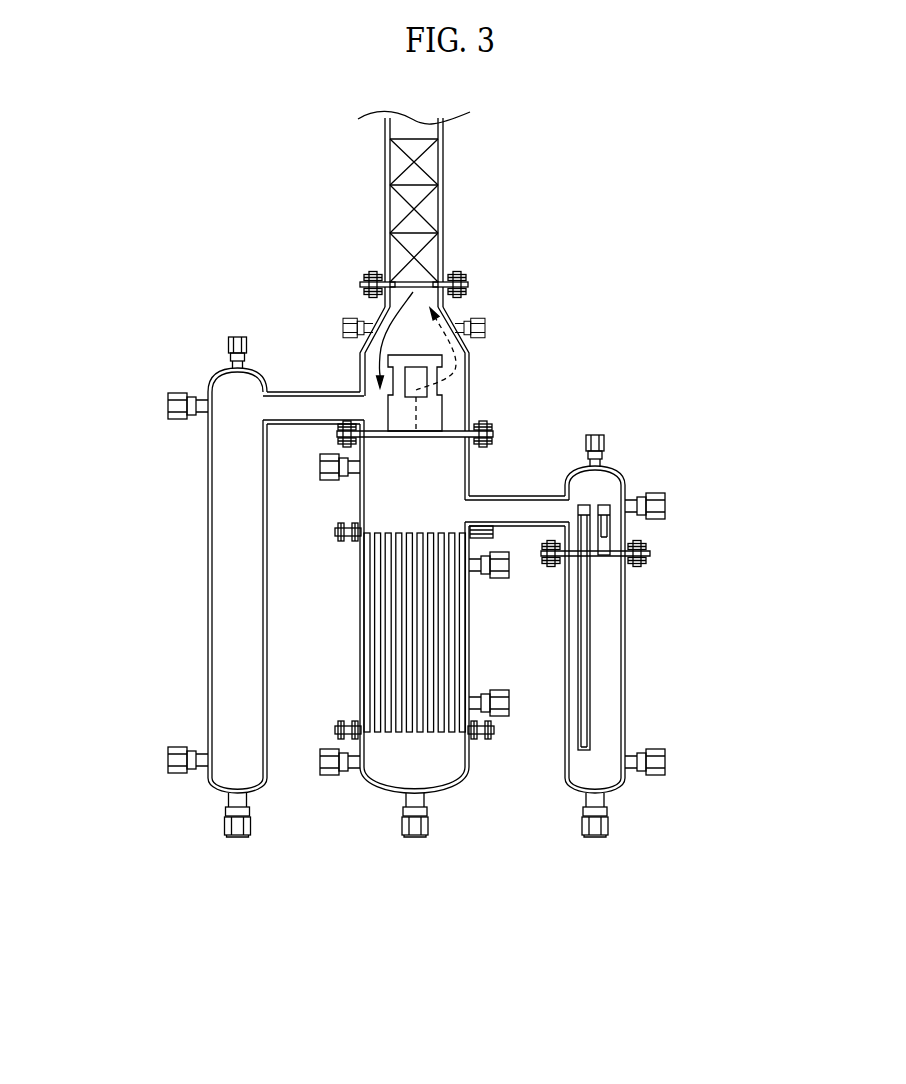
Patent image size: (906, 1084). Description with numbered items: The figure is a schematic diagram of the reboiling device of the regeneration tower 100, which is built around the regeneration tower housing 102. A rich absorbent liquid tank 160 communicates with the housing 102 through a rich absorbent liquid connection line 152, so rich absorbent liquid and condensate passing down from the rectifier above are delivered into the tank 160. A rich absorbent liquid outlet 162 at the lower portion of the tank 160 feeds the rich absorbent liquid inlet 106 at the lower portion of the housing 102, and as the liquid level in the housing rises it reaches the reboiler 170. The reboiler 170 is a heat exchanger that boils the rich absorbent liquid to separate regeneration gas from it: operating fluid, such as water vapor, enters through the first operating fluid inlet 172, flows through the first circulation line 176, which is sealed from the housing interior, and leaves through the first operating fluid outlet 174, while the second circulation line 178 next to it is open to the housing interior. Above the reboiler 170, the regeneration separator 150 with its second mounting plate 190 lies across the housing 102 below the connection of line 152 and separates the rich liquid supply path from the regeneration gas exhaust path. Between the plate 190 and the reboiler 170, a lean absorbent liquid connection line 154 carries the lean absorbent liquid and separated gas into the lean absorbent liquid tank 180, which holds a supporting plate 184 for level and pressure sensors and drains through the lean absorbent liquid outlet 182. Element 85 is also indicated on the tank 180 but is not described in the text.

The regeneration tower 100 is at (296, 293).
The regeneration tower housing 102 is at (447, 253).
The rich absorbent liquid inlet 106 is at (411, 838).
The regeneration separator 150 is at (466, 370).
The rich absorbent liquid connection line 152 is at (314, 392).
The lean absorbent liquid connection line 154 is at (553, 496).
The rich absorbent liquid tank 160 is at (204, 567).
The rich absorbent liquid outlet 162 is at (232, 838).
The reboiler 170 is at (480, 617).
The first operating fluid inlet 172 is at (512, 565).
The first operating fluid outlet 174 is at (512, 703).
The first circulation line 176 is at (433, 537).
The second circulation line 178 is at (458, 537).
The lean absorbent liquid tank 180 is at (631, 469).
The lean absorbent liquid outlet 182 is at (590, 838).
The supporting plate 184 is at (612, 535).
The second mounting plate 190 is at (452, 433).
The tank wall 85 is at (626, 606).